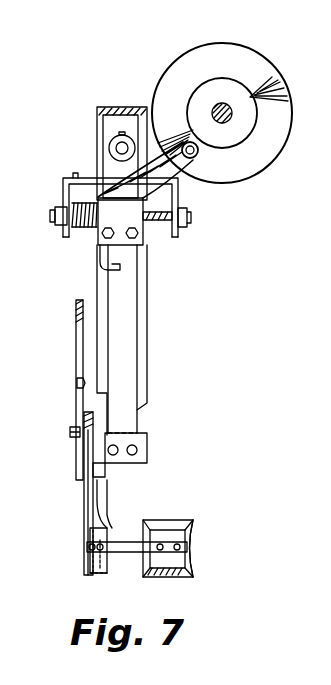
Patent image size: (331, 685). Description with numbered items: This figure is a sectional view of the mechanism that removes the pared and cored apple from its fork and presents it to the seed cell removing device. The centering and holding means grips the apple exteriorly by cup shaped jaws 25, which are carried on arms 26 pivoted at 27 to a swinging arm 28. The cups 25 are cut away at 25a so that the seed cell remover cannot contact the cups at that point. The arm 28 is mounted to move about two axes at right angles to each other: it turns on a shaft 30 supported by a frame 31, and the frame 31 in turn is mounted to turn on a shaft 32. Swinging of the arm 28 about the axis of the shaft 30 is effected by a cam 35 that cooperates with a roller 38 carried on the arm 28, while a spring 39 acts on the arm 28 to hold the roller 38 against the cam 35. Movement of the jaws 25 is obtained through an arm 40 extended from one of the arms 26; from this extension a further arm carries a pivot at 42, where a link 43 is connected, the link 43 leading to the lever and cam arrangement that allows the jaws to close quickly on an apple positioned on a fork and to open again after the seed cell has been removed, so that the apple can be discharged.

The cam 35 is at (263, 62).
The roller 38 is at (200, 163).
The shaft 32 is at (117, 150).
The frame 31 is at (90, 178).
The spring 39 is at (88, 228).
The shaft 30 is at (162, 226).
The swinging arm 28 is at (125, 335).
The link 43 is at (77, 343).
The pivot 42 is at (77, 383).
The arm 40 is at (84, 412).
The pivot 27 is at (70, 432).
The arms 26 is at (82, 482).
The cup shaped jaws 25 is at (160, 520).
The cut away 25a is at (188, 547).